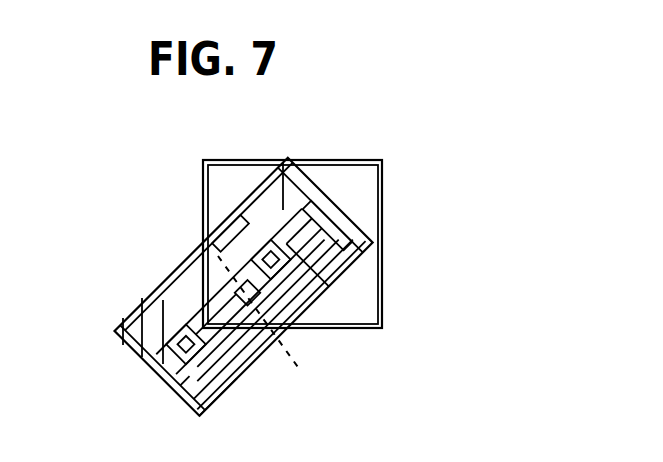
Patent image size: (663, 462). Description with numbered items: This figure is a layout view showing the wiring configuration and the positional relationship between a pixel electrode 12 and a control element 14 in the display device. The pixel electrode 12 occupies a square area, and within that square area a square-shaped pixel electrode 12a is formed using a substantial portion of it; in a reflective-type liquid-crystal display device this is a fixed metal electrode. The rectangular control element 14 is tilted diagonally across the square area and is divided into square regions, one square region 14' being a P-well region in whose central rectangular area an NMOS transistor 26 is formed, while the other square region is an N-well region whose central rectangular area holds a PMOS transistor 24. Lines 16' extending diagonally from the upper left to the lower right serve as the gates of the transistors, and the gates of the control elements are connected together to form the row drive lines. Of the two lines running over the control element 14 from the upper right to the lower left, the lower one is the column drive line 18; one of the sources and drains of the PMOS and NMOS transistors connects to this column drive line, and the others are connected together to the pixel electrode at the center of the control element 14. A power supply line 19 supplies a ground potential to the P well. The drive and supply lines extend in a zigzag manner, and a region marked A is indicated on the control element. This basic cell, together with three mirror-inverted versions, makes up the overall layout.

The pixel electrode 12 is at (202, 216).
The pixel electrode 12a is at (240, 178).
The control element 14 is at (240, 289).
The square region 14' is at (316, 315).
The lines 16' is at (369, 287).
The column drive line 18 is at (288, 181).
The power supply line 19 is at (145, 314).
The PMOS transistor 24 is at (167, 357).
The NMOS transistor 26 is at (324, 215).
The section region A is at (268, 322).